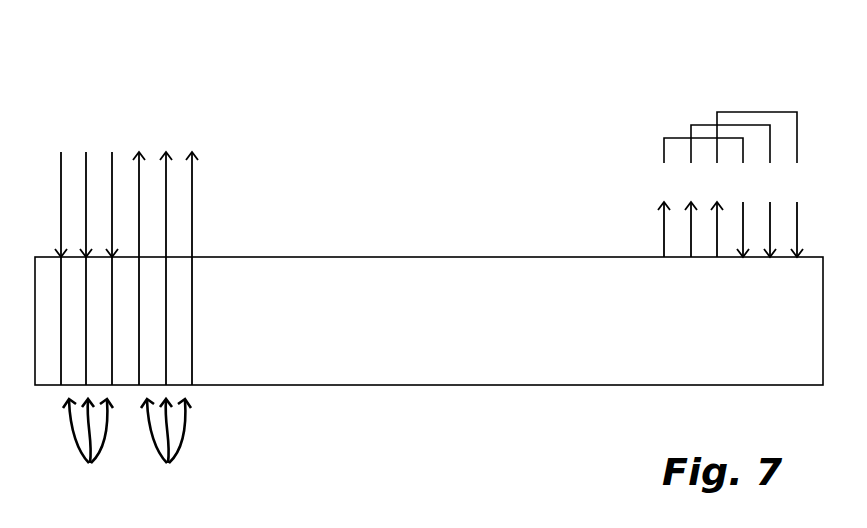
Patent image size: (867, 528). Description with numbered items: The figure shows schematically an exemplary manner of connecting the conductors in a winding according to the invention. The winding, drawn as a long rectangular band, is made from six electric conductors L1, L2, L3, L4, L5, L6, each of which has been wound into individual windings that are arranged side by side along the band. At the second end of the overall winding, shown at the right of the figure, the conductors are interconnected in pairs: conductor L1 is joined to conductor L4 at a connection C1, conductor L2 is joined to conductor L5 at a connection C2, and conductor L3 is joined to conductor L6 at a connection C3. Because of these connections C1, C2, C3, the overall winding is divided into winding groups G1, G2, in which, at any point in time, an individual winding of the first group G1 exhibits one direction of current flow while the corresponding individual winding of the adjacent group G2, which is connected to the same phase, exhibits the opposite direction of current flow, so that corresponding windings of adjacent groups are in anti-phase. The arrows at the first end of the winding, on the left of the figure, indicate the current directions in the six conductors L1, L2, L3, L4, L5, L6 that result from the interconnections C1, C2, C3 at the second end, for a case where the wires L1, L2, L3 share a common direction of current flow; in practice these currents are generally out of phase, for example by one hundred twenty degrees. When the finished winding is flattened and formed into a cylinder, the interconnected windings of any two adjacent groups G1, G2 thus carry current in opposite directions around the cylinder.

The first electric conductor L1 is at (362, 253).
The electric conductor L2 is at (388, 253).
The electric conductor L3 is at (414, 253).
The electric conductor L4 is at (440, 253).
The electric conductor L5 is at (467, 253).
The electric conductor L6 is at (493, 253).
The connection C1 is at (674, 136).
The connection C2 is at (722, 123).
The connection C3 is at (766, 110).
The winding group G1 is at (88, 447).
The winding group G2 is at (166, 447).